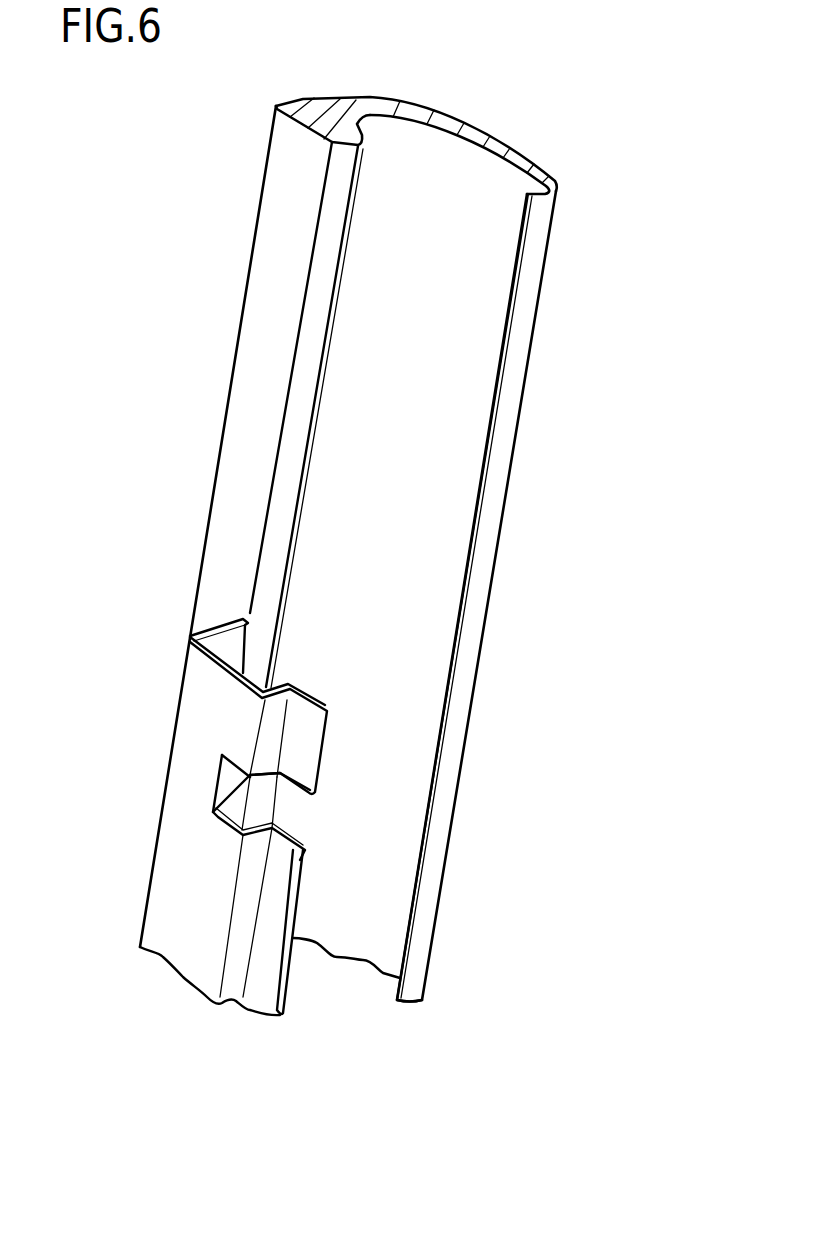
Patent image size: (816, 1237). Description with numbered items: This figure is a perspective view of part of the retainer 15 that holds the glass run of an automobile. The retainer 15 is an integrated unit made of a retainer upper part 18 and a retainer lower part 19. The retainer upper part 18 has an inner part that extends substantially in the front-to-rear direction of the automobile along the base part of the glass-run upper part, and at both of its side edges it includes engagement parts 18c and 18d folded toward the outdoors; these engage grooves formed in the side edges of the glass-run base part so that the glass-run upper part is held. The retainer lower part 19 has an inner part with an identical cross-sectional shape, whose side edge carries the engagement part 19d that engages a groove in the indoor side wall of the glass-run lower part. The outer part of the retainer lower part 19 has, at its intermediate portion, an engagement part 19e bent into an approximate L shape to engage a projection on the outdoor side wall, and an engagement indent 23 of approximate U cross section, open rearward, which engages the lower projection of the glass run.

The retainer 15 is at (498, 540).
The retainer upper part 18 is at (238, 326).
The engagement part 18c is at (314, 393).
The engagement part 18d is at (533, 327).
The retainer lower part 19 is at (143, 907).
The engagement part 19d is at (400, 952).
The engagement part 19e is at (237, 973).
The engagement indent 23 is at (293, 788).